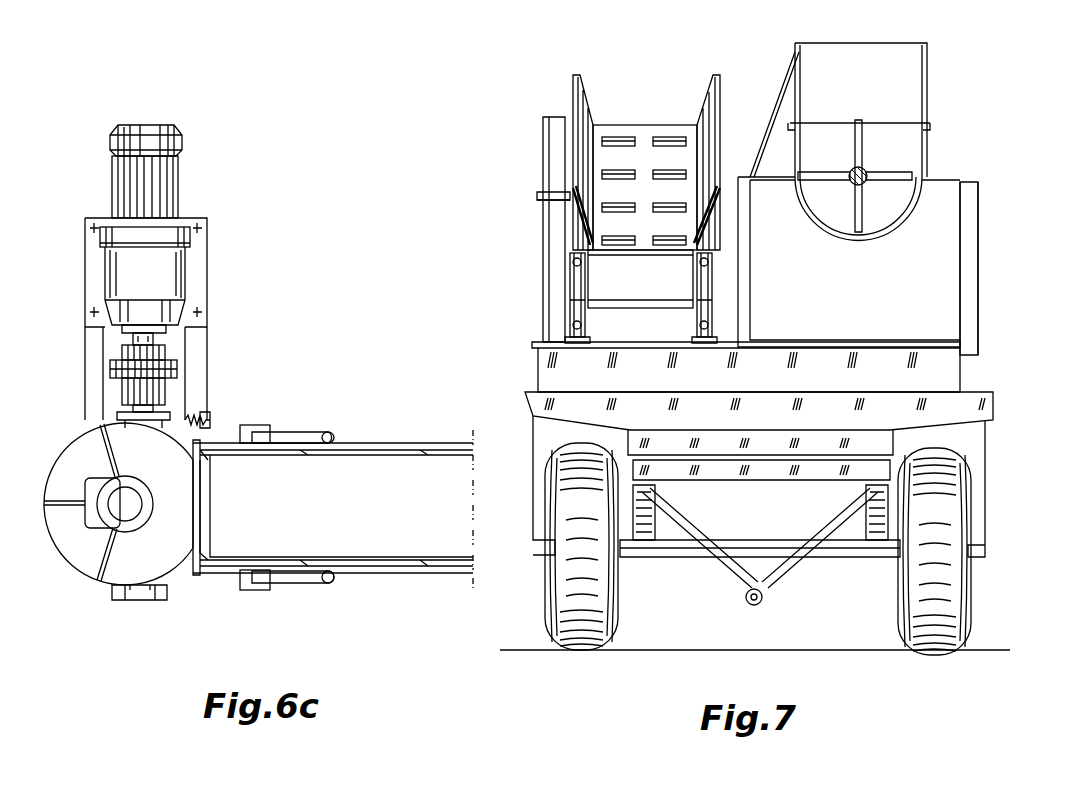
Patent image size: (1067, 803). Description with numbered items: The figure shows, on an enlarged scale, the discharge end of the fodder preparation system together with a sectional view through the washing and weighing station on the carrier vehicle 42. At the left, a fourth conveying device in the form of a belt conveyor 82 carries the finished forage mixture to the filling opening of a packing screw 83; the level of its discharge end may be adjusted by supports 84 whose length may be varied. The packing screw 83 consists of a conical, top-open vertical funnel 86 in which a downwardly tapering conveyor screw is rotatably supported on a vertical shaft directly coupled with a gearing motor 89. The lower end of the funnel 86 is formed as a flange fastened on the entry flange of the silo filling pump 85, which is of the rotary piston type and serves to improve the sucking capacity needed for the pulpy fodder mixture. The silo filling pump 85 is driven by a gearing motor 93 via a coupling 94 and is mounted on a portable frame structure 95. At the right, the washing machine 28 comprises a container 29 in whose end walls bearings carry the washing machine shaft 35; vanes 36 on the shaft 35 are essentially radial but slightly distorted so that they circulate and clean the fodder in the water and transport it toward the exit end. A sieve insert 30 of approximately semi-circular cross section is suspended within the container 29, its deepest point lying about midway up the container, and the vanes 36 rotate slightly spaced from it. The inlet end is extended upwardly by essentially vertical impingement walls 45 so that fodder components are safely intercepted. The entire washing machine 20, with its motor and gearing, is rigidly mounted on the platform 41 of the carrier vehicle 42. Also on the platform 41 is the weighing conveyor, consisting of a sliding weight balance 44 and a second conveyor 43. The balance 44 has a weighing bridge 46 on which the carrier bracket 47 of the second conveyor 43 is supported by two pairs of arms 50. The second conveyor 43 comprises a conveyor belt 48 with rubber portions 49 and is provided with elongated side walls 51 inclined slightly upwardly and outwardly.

In FIG. 6c, the gearing motor 93 is at (180, 180).
In FIG. 6c, the portable frame structure 95 is at (205, 255).
In FIG. 6c, the coupling 94 is at (115, 368).
In FIG. 6c, the funnel 86 is at (76, 448).
In FIG. 6c, the gearing motor 89 is at (130, 512).
In FIG. 6c, the packing screw 83 is at (68, 578).
In FIG. 6c, the silo filling pump 85 is at (180, 606).
In FIG. 6c, the supports 84 is at (292, 432).
In FIG. 6c, the belt conveyor 82 is at (397, 435).
In FIG. 7, the sliding weight balance 44 is at (553, 147).
In FIG. 7, the second conveyor 43 is at (500, 199).
In FIG. 7, the side walls 51 is at (578, 88).
In FIG. 7, the conveyor belt 48 is at (632, 134).
In FIG. 7, the rubber portions 49 is at (668, 134).
In FIG. 7, the carrier bracket 47 is at (575, 278).
In FIG. 7, the arms 50 is at (572, 328).
In FIG. 7, the weighing bridge 46 is at (780, 378).
In FIG. 7, the impingement walls 45 is at (796, 80).
In FIG. 7, the washing machine shaft 35 is at (866, 170).
In FIG. 7, the vanes 36 is at (858, 222).
In FIG. 7, the sieve insert 30 is at (880, 240).
In FIG. 7, the washing machine 20 is at (990, 248).
In FIG. 7, the washing machine 28 is at (928, 322).
In FIG. 7, the container 29 is at (928, 322).
In FIG. 7, the platform 41 is at (993, 420).
In FIG. 7, the carrier vehicle 42 is at (998, 490).